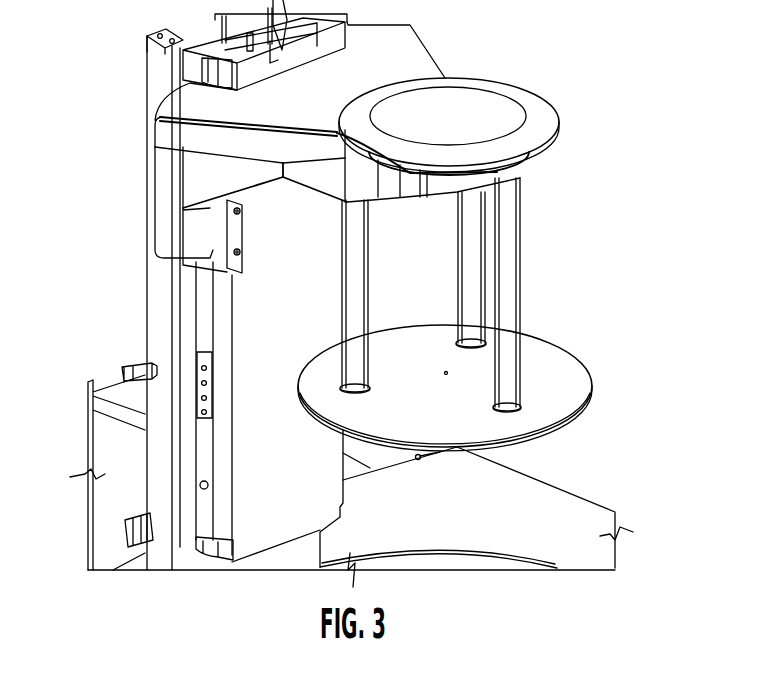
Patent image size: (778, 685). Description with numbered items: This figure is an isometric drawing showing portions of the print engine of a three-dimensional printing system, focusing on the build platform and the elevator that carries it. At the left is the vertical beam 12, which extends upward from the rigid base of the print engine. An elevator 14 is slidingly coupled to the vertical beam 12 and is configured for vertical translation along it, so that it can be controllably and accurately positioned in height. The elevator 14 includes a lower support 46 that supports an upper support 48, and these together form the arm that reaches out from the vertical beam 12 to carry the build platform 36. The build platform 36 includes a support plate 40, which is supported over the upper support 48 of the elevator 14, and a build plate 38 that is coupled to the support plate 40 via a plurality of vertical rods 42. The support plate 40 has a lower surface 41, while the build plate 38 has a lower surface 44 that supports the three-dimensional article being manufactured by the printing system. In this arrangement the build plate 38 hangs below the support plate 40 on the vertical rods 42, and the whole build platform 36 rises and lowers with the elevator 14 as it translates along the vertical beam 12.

The vertical beam 12 is at (152, 432).
The elevator 14 is at (462, 53).
The build platform 36 is at (577, 273).
The build plate 38 is at (555, 386).
The support plate 40 is at (546, 118).
The lower surface 41 is at (529, 170).
The vertical rods 42 is at (522, 342).
The lower surface 44 is at (548, 428).
The lower support 46 is at (318, 178).
The upper support 48 is at (270, 143).